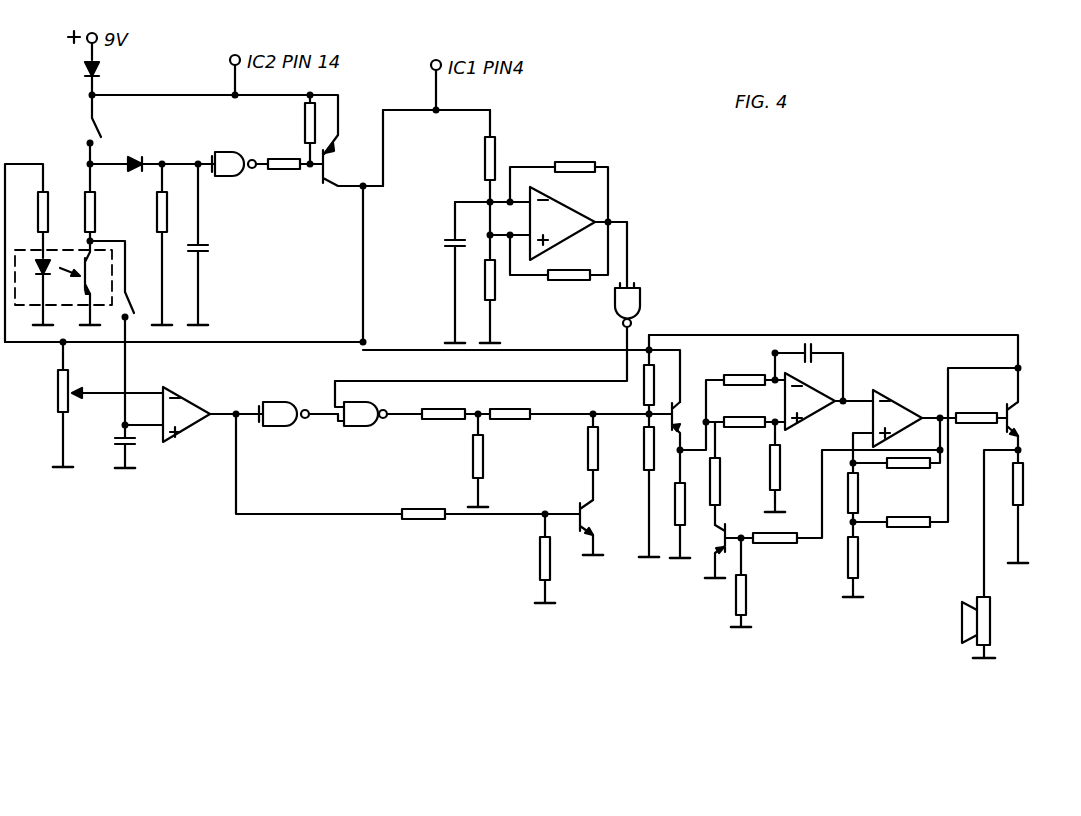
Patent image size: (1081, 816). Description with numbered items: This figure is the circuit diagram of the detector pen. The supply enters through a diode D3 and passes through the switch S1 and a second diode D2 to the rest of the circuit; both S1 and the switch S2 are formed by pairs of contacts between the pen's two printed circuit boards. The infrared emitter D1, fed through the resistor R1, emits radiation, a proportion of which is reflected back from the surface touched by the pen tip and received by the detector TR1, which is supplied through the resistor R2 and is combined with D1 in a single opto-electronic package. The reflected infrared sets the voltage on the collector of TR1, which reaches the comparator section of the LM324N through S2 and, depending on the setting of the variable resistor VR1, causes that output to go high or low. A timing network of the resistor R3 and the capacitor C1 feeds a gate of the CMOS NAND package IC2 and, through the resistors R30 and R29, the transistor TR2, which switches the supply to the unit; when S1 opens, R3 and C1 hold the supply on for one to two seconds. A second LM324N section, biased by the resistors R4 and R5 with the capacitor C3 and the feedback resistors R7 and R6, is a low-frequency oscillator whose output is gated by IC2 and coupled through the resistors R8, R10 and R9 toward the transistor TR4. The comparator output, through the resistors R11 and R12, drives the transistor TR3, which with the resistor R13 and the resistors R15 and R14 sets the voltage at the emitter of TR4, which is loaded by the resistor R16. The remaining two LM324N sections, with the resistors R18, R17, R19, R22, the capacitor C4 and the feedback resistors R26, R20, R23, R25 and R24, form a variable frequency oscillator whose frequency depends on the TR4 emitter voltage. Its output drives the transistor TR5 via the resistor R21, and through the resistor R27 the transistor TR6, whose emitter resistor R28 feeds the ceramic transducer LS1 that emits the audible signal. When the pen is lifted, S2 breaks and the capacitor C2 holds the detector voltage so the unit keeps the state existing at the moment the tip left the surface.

The diode D3 is at (107, 73).
The switch S1 is at (105, 139).
The diode D2 is at (134, 155).
The resistor 470K R1 is at (63, 224).
The resistor 3K3 R2 is at (105, 202).
The resistor R3 is at (181, 244).
The capacitor C1 is at (207, 244).
The infrared emitter D1 is at (63, 287).
The photo-detector transistor TR1 is at (104, 283).
The switch S2 is at (141, 358).
The NAND gates IC2 is at (646, 306).
The resistor 3K3 R30 is at (289, 166).
The resistor 10K R29 is at (291, 129).
The transistor 2N3906 TR2 is at (339, 181).
The resistor 10K R4 is at (475, 172).
The capacitor 10uF C3 is at (442, 272).
The resistor 12K R5 is at (478, 289).
The resistor 27K R7 is at (559, 182).
The resistor 12K R6 is at (559, 262).
The variable resistor VR1 is at (91, 404).
The capacitor C2 is at (134, 447).
The resistor 7k2 R8 is at (443, 415).
The resistor 33K R10 is at (510, 415).
The resistor 2k7 R9 is at (465, 460).
The resistor 12k R11 is at (408, 477).
The resistor 2k7 R12 is at (530, 558).
The resistor R13 is at (577, 457).
The transistor TR3 is at (606, 527).
The resistor 15k R15 is at (636, 485).
The resistor 10k R14 is at (664, 374).
The transistor TR4 is at (693, 426).
The resistor 1k R16 is at (671, 504).
The resistor 100k R18 is at (754, 380).
The resistor 47k R17 is at (754, 426).
The resistor 39k R19 is at (733, 473).
The transistor TR5 is at (715, 551).
The resistor 47K R22 is at (793, 467).
The capacitor 1uF C4 is at (812, 367).
The resistor 100k R26 is at (896, 464).
The resistor 12k R20 is at (840, 508).
The resistor 56k R23 is at (840, 505).
The resistor 4k7 R25 is at (935, 461).
The resistor 4k7 R24 is at (839, 567).
The resistor 2k7 R21 is at (759, 582).
The resistor 1k R27 is at (981, 419).
The transistor TR6 is at (1031, 409).
The resistor 1k R28 is at (1036, 506).
The ceramic transducer LS1 is at (996, 554).